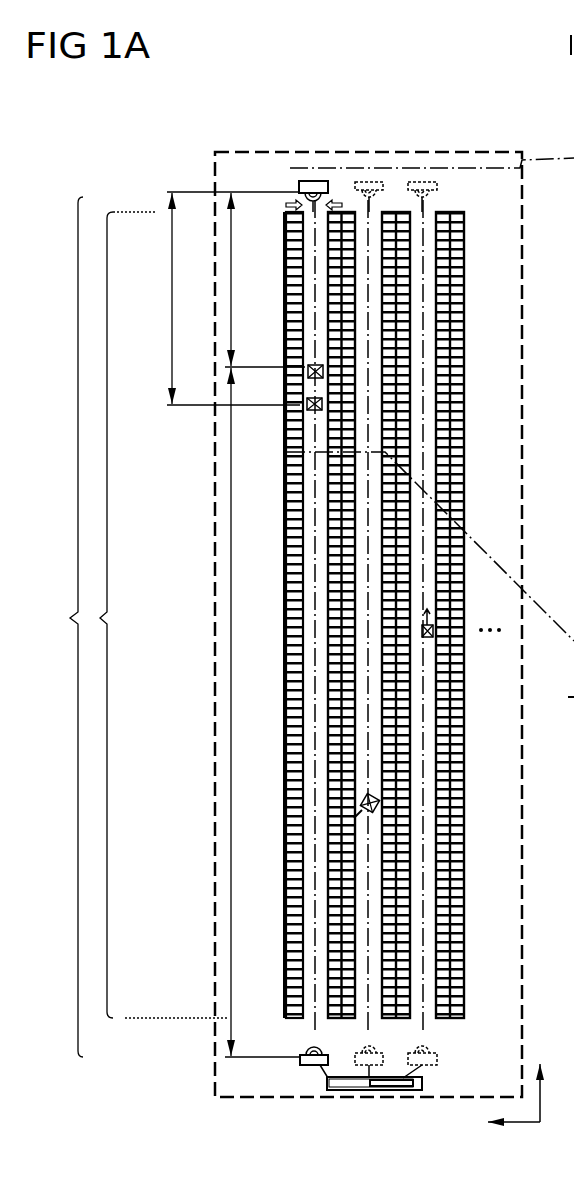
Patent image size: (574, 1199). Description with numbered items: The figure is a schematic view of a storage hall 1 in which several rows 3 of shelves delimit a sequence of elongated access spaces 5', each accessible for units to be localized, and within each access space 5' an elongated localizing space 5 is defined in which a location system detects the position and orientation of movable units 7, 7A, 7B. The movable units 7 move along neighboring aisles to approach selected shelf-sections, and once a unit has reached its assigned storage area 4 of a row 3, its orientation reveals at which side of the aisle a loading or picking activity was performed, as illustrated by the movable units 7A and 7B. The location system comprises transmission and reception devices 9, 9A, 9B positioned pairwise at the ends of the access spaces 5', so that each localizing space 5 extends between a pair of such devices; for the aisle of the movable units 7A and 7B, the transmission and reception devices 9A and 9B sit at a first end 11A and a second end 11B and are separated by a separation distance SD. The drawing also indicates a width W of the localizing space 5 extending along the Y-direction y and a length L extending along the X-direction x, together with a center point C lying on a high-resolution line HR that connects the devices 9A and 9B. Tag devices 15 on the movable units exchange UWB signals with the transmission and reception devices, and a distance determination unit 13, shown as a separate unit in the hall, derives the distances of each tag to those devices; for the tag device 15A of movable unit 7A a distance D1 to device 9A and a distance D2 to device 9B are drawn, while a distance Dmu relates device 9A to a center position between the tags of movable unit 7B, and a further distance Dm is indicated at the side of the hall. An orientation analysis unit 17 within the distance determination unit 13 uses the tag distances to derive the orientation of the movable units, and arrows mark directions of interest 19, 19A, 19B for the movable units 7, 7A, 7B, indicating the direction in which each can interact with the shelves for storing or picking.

The storage hall 1 is at (447, 151).
The row of shelves 3 is at (442, 205).
The storage area 4 is at (290, 533).
The localizing space 5 is at (274, 222).
The access space 5' is at (372, 1059).
The movable unit 7 is at (432, 613).
The movable unit 7A is at (308, 372).
The movable unit 7B is at (306, 410).
The transmission and reception device 9 is at (442, 181).
The transmission and reception device 9A is at (327, 181).
The transmission and reception device 9B is at (303, 1067).
The first end 11A is at (288, 206).
The second end 11B is at (300, 1016).
The distance determination unit 13 is at (350, 1091).
The tag device 15 is at (430, 645).
The tag device 15A is at (307, 368).
The orientation analysis unit 17 is at (405, 1091).
The direction of interest 19 is at (426, 608).
The direction of interest 19A is at (307, 404).
The direction of interest 19B is at (300, 455).
The width W is at (302, 207).
The high-resolution line HR is at (381, 211).
The center point C is at (313, 595).
The distance D1 is at (231, 240).
The distance D2 is at (231, 588).
The distance Dmu is at (172, 277).
The mean distance Dm is at (558, 366).
The separation distance SD is at (57, 627).
The length L is at (156, 615).
The X-direction x is at (553, 1087).
The Y-direction y is at (514, 1137).